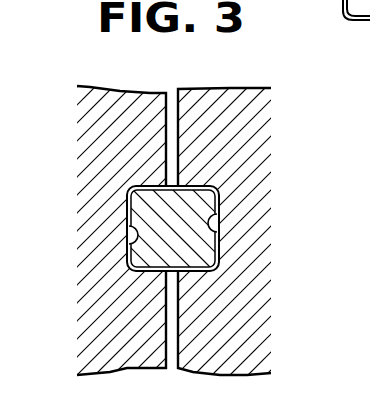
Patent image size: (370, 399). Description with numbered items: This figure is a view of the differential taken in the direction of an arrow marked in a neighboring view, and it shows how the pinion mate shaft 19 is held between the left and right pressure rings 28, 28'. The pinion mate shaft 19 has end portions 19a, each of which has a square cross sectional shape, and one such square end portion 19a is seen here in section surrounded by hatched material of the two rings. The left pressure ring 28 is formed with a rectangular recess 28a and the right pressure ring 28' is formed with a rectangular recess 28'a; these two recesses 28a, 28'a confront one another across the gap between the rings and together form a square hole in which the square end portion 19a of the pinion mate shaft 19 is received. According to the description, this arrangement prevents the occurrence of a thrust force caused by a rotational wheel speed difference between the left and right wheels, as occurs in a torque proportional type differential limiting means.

The left pressure ring 28 is at (185, 230).
The right pressure ring 28' is at (185, 230).
The pinion mate shaft 19 is at (186, 242).
The rectangular recess 28a is at (130, 245).
The rectangular recess 28'a is at (280, 215).
The end portion 19a is at (210, 250).